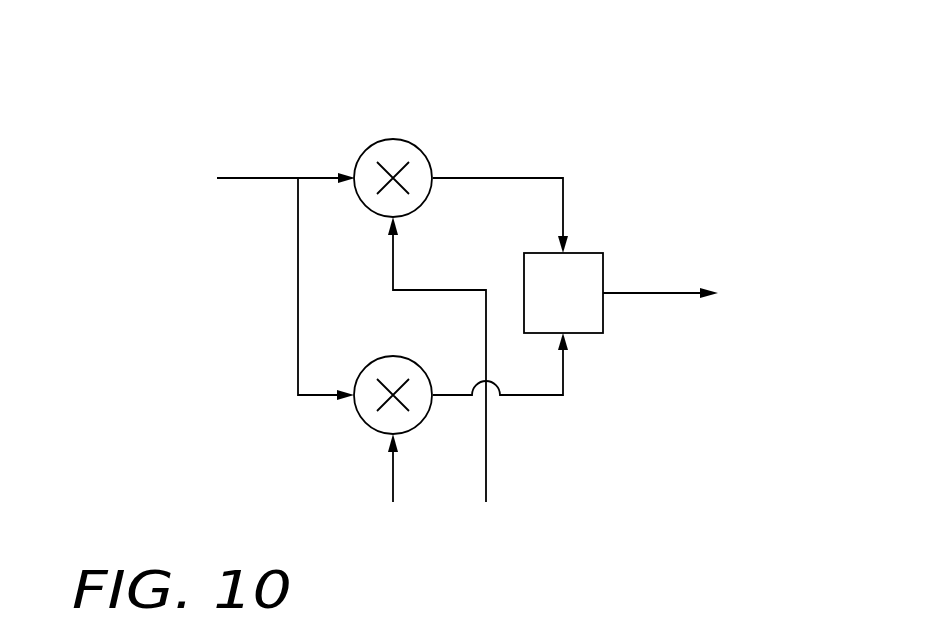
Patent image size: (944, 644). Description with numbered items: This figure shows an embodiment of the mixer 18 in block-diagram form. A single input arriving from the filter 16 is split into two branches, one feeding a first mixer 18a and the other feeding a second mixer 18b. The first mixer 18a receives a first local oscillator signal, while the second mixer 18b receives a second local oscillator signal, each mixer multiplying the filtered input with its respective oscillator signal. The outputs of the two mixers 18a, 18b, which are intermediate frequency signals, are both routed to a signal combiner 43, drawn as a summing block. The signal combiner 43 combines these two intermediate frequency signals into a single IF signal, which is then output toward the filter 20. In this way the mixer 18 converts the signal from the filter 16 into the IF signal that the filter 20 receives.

The filter 16 is at (130, 158).
The mixer 18 is at (528, 82).
The mixer 18a is at (395, 138).
The mixer 18b is at (395, 355).
The signal combiner 43 is at (567, 252).
The filter 20 is at (820, 275).